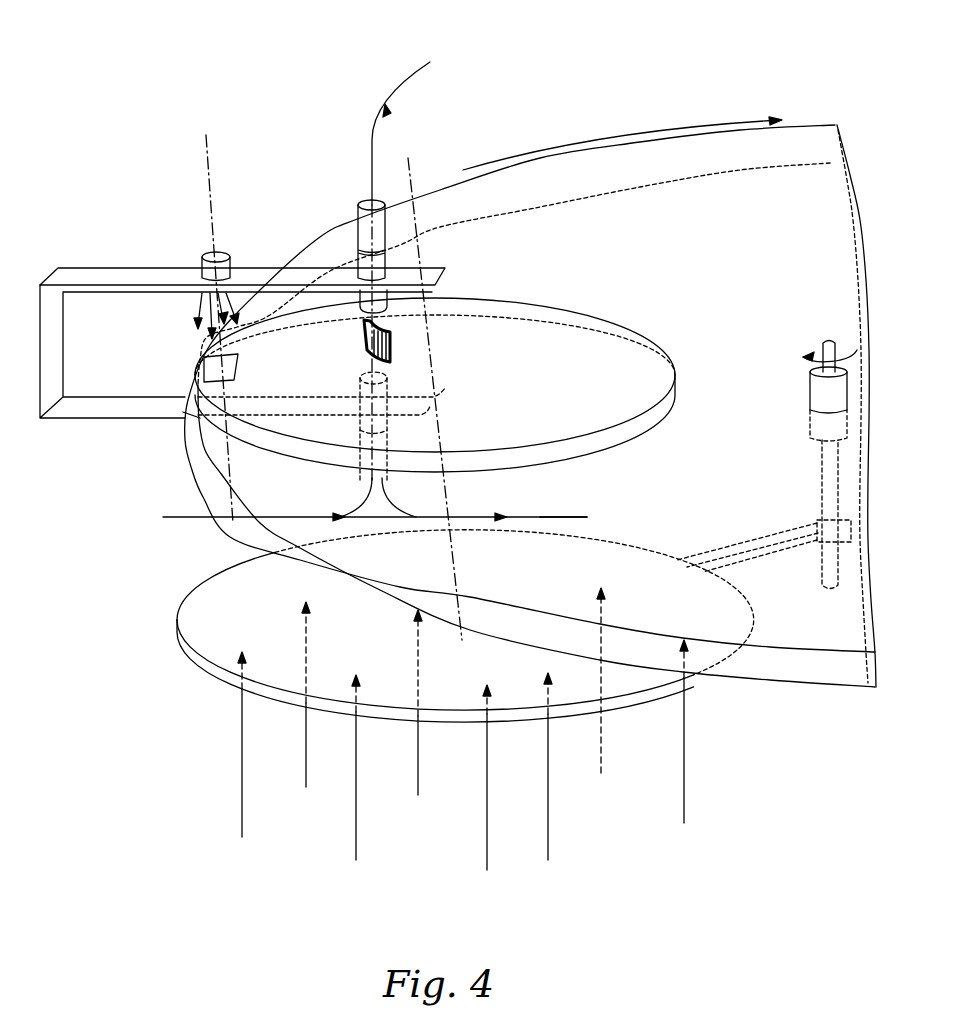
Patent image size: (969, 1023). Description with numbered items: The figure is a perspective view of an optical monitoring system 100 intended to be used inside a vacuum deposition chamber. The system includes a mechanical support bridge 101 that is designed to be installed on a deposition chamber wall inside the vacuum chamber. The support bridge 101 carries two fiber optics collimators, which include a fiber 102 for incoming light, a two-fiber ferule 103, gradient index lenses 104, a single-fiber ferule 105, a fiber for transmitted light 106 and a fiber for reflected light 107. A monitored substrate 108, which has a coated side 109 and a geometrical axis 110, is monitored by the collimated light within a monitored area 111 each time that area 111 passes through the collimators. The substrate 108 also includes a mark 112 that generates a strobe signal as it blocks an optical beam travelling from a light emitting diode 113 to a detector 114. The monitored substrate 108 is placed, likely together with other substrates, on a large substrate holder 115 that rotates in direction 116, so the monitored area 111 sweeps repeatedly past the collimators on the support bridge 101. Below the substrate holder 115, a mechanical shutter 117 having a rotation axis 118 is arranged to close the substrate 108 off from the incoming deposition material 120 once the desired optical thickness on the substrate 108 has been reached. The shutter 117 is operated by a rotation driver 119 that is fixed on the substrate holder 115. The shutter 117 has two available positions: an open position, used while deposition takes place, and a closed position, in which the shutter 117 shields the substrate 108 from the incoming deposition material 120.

The optical monitoring system 100 is at (625, 843).
The mechanical support bridge 101 is at (115, 277).
The fiber for incoming light 102 is at (163, 517).
The two-fiber ferule 103 is at (388, 492).
The gradient index (GRIN) lenses 104 is at (387, 300).
The single-fiber ferule 105 is at (387, 227).
The fiber for transmitted light 106 is at (413, 80).
The fiber for reflected light 107 is at (567, 515).
The monitored substrate 108 is at (640, 320).
The coated side 109 is at (650, 430).
The geometrical axis 110 is at (410, 168).
The monitored area 111 is at (362, 335).
The mark 112 is at (203, 352).
The light emitting diode 113 is at (205, 250).
The detector 114 is at (186, 411).
The substrate holder 115 is at (815, 143).
The direction of rotation 116 is at (573, 143).
The mechanical shutter 117 is at (740, 603).
The rotation axis 118 is at (817, 477).
The rotation driver 119 is at (808, 383).
The incoming deposition material 120 is at (435, 711).